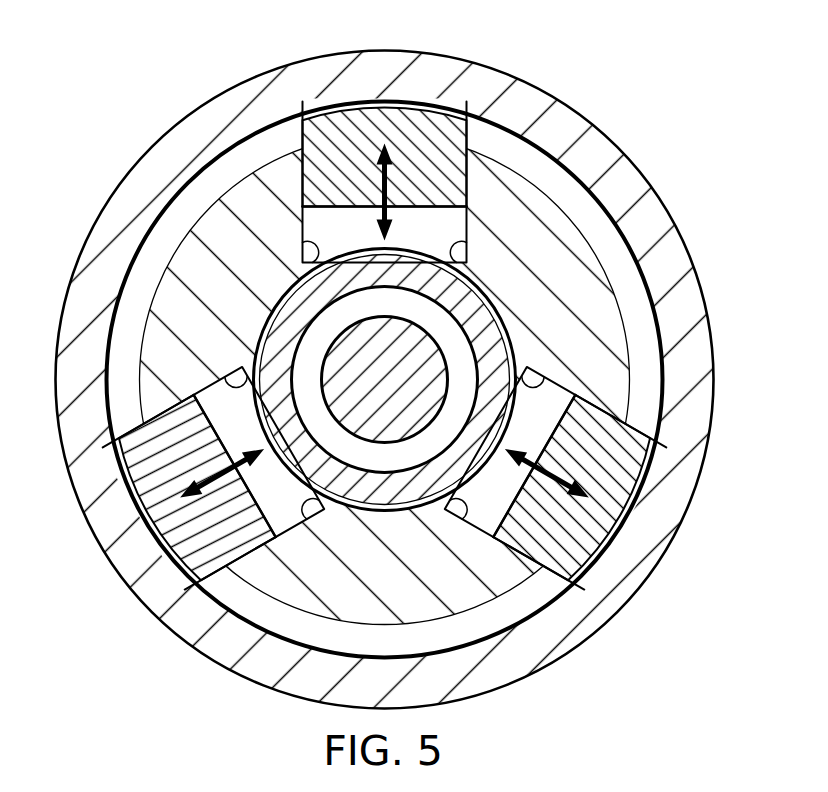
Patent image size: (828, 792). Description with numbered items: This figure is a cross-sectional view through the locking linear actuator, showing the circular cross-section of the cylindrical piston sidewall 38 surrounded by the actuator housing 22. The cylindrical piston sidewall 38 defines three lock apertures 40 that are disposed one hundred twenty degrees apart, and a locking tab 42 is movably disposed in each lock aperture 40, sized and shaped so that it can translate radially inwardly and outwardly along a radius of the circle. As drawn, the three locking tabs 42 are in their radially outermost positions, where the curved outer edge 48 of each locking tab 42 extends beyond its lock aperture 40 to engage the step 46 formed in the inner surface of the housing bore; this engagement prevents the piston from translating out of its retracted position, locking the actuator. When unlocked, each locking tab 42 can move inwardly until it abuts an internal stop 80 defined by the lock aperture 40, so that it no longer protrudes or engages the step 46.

The actuator housing 22 is at (577, 113).
The cylindrical piston sidewall 38 is at (240, 193).
The lock aperture 40 is at (466, 238).
The locking tab 42 is at (370, 338).
The step 46 is at (172, 210).
The outer edge 48 is at (330, 112).
The internal stop 80 is at (300, 250).